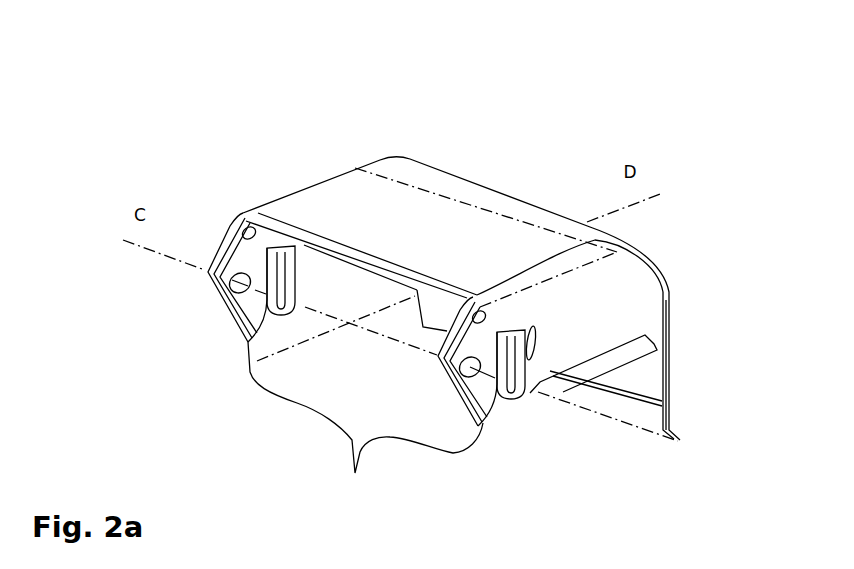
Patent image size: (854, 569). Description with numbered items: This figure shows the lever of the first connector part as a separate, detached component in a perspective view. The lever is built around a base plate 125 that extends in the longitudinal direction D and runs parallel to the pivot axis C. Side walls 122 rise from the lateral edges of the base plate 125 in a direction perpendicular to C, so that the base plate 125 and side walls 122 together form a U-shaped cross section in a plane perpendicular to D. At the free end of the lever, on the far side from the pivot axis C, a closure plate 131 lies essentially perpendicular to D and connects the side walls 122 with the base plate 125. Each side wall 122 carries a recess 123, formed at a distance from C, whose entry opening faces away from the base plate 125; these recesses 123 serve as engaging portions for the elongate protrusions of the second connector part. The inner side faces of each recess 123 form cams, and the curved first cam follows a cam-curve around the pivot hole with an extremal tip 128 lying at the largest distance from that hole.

The side wall 122 is at (593, 307).
The recess 123 is at (287, 258).
The base plate 125 is at (427, 203).
The extremal tip 128 is at (355, 473).
The closure plate 131 is at (627, 362).